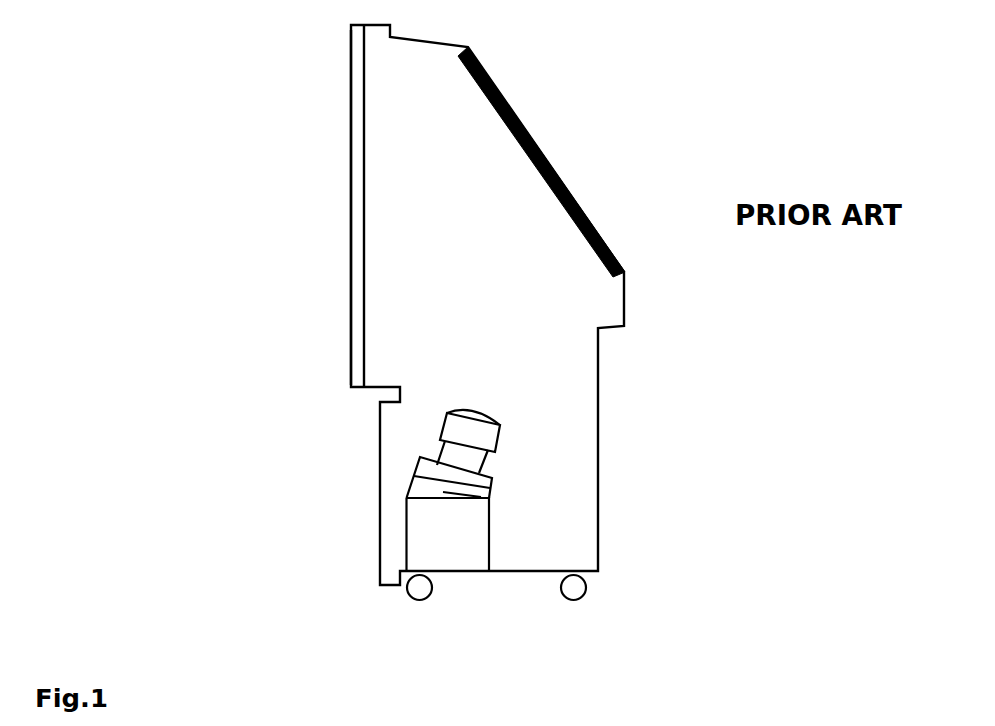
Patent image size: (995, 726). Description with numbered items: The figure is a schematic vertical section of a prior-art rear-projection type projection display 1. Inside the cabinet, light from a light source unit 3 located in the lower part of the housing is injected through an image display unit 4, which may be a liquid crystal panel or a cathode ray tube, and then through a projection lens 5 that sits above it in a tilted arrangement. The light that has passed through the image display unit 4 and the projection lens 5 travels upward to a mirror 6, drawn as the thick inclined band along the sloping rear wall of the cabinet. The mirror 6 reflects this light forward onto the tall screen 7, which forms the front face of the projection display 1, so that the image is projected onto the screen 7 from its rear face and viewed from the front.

The projection display 1 is at (288, 419).
The light source unit 3 is at (489, 498).
The image display unit 4 is at (472, 478).
The projection lens 5 is at (487, 438).
The mirror 6 is at (548, 158).
The screen 7 is at (350, 200).